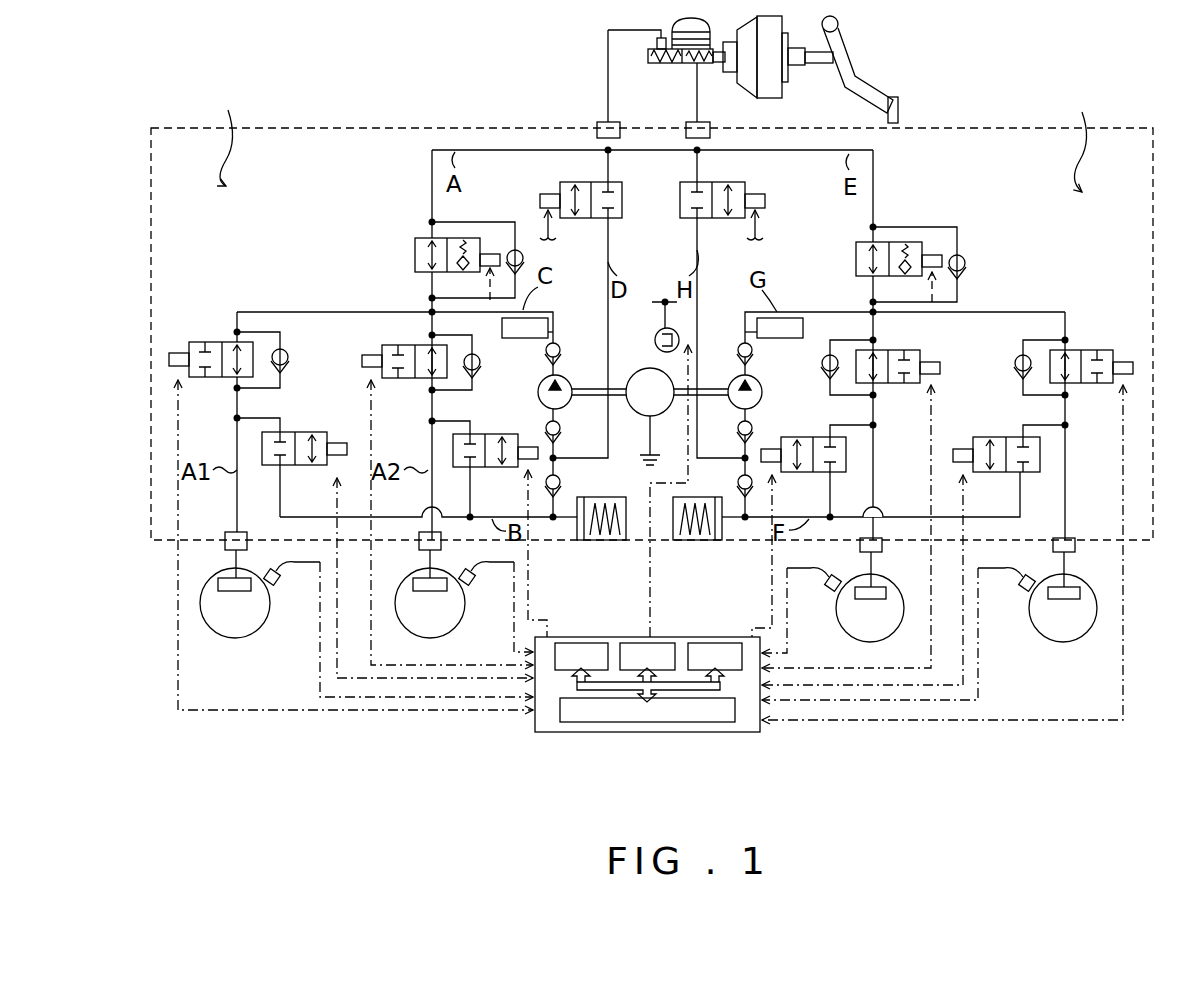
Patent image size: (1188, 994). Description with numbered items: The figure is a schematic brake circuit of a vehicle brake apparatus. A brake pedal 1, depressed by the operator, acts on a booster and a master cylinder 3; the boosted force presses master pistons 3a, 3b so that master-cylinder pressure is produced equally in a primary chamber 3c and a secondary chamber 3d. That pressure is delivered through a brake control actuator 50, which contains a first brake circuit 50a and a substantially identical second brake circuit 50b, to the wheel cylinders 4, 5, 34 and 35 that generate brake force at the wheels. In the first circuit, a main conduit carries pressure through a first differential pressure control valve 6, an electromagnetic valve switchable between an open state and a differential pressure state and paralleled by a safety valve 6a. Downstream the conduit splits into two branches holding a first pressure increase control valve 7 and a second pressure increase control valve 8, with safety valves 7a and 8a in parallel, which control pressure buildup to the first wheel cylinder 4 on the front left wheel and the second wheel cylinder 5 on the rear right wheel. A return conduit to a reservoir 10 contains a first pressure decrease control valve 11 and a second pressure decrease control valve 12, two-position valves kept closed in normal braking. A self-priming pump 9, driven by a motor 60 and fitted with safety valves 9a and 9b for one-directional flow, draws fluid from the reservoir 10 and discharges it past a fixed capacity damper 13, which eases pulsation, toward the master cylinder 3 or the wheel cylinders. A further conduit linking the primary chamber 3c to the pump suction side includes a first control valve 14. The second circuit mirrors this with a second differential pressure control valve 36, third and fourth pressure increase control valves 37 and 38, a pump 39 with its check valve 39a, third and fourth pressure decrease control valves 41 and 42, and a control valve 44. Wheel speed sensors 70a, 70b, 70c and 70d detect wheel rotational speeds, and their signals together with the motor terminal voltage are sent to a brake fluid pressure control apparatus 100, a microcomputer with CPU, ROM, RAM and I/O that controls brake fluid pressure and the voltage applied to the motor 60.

The brake pedal 1 is at (850, 43).
The master cylinder 3 is at (694, 77).
The master piston 3a is at (683, 64).
The master piston 3b is at (714, 64).
The primary chamber 3c is at (659, 64).
The secondary chamber 3d is at (700, 64).
The first wheel cylinder 4 is at (218, 586).
The second wheel cylinder 5 is at (413, 586).
The first differential pressure control valve 6 is at (445, 249).
The safety valve 6a is at (515, 250).
The first pressure increase control valve 7 is at (236, 335).
The safety valve 7a is at (288, 349).
The second pressure increase control valve 8 is at (414, 345).
The safety valve 8a is at (479, 361).
The self-priming pump 9 is at (540, 392).
The safety valve 9a is at (562, 427).
The safety valve 9b is at (560, 345).
The reservoir 10 is at (626, 545).
The first pressure decrease control valve 11 is at (284, 430).
The second pressure decrease control valve 12 is at (480, 433).
The fixed capacity damper 13 is at (548, 316).
The first control valve 14 is at (588, 182).
The wheel cylinder 34 is at (1080, 593).
The wheel cylinder 35 is at (886, 593).
The second differential pressure control valve 36 is at (856, 260).
The third pressure increase control valve 37 is at (1070, 348).
The fourth pressure increase control valve 38 is at (884, 350).
The pump 39 is at (764, 392).
The pump inlet check valve 39a is at (736, 427).
The third pressure decrease control valve 41 is at (1018, 434).
The fourth pressure decrease control valve 42 is at (822, 435).
The control valve 44 is at (718, 182).
The brake control actuator 50 is at (1153, 127).
The first brake circuit 50a is at (223, 136).
The second brake circuit 50b is at (1076, 140).
The motor 60 is at (637, 370).
The wheel speed sensor 70a is at (277, 584).
The wheel speed sensor 70b is at (472, 584).
The wheel speed sensor 70c is at (829, 590).
The wheel speed sensor 70d is at (1023, 590).
The brake fluid pressure control apparatus 100 is at (760, 728).